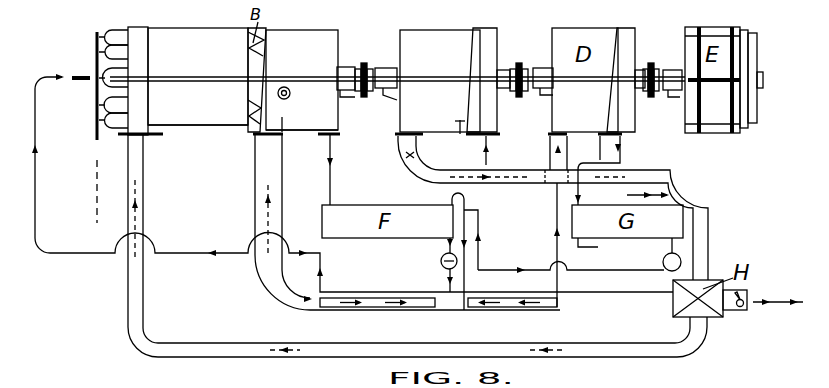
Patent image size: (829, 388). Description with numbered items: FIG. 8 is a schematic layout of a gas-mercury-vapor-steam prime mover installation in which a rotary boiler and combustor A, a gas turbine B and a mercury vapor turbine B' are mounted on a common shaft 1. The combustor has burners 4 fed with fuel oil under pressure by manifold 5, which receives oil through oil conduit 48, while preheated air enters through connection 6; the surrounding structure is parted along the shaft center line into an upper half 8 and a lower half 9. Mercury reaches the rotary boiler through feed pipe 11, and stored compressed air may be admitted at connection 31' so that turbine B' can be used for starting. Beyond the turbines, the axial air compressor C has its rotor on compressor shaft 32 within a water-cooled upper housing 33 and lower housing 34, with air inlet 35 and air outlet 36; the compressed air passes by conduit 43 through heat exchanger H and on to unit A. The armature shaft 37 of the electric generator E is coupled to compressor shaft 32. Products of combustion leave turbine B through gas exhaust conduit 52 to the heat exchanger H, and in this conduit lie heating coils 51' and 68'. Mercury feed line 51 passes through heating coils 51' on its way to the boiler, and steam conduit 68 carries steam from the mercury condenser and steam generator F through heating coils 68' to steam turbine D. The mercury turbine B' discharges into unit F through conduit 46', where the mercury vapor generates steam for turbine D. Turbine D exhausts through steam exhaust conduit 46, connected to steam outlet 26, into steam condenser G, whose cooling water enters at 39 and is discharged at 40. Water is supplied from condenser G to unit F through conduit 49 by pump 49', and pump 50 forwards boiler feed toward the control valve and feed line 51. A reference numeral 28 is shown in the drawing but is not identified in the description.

The common shaft 1 is at (356, 66).
The burners 4 is at (113, 77).
The fuel oil manifold 5 is at (96, 133).
The preheated air connection 6 is at (144, 127).
The upper half of surrounding structure 8 is at (160, 33).
The lower half of surrounding structure 9 is at (197, 125).
The feed pipe 11 is at (89, 81).
The steam outlet 26 is at (330, 130).
The inlet foot 28 is at (257, 135).
The compressed air starting connection 31' is at (304, 98).
The compressor shaft 32 is at (371, 66).
The upper housing 33 is at (433, 38).
The lower housing 34 is at (399, 136).
The air inlet 35 is at (499, 134).
The air outlet 36 is at (419, 131).
The armature shaft 37 is at (659, 68).
The condenser water inlet 39 is at (633, 197).
The condenser water discharge 40 is at (599, 249).
The compressed air conduit 43 is at (135, 175).
The steam exhaust conduit 46 is at (608, 170).
The mercury turbine discharge conduit 46' is at (360, 169).
The oil conduit 48 is at (96, 192).
The water conduit 49 is at (571, 277).
The pump 49' is at (659, 254).
The pump 50 is at (433, 262).
The mercury feed line 51 is at (352, 183).
The heating coils 51' is at (377, 317).
The gas exhaust conduit 52 is at (263, 173).
The steam conduit 68 is at (536, 245).
The heating coils 68' is at (517, 321).